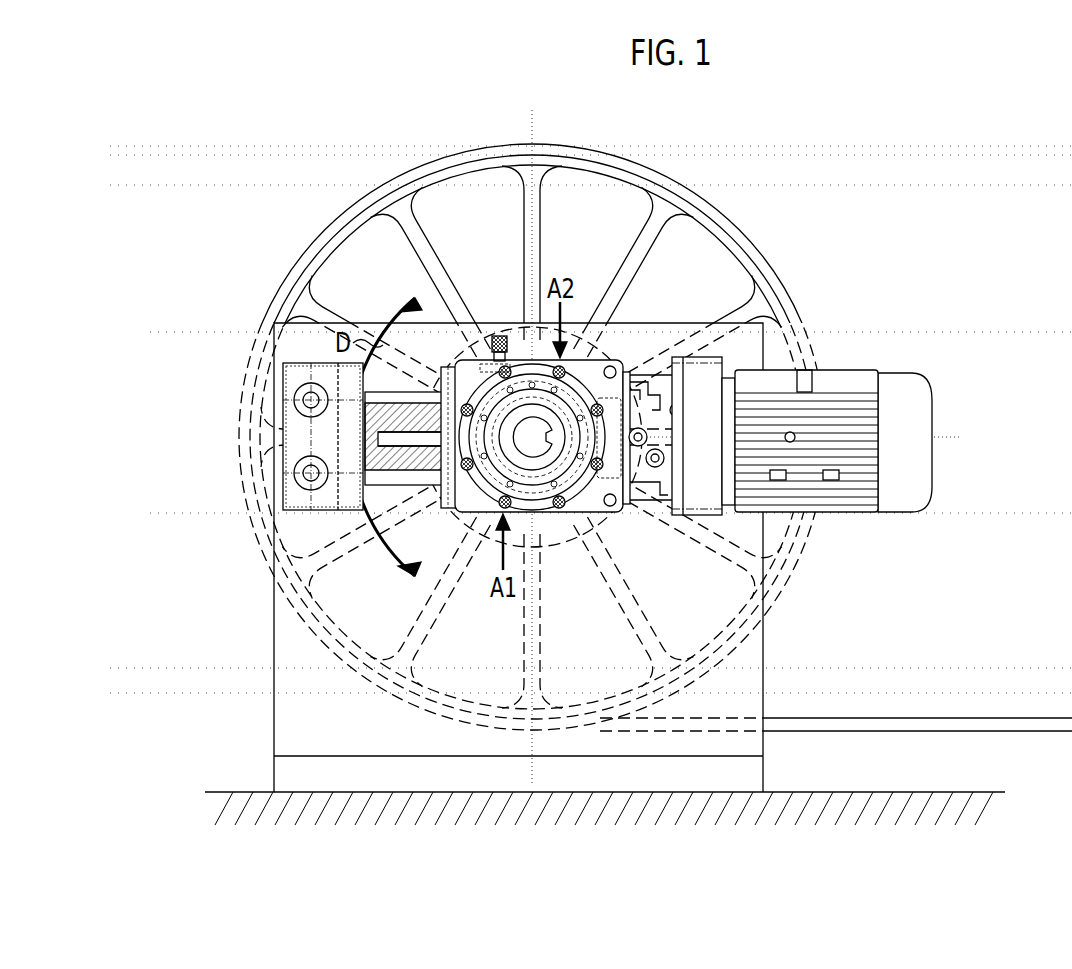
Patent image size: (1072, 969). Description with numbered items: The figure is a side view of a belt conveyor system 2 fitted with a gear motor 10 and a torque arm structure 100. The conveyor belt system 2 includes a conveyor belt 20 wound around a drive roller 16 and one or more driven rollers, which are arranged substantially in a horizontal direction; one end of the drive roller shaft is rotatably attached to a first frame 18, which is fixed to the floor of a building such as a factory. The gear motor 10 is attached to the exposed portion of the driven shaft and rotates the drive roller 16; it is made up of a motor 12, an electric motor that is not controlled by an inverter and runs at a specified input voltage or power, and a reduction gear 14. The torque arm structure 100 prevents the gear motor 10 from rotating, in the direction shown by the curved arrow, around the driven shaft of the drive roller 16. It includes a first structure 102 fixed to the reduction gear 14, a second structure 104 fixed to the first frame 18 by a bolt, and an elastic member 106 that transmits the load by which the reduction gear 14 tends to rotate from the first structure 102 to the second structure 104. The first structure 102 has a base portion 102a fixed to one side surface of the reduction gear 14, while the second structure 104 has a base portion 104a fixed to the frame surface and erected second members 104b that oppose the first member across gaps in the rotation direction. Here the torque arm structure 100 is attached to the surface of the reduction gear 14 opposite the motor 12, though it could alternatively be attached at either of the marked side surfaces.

The conveyor belt system 2 is at (257, 204).
The gear motor 10 is at (693, 347).
The motor 12 is at (836, 380).
The reduction gear 14 is at (602, 364).
The drive roller 16 is at (278, 296).
The first frame 18 is at (290, 710).
The conveyor belt 20 is at (818, 723).
The torque arm structure 100 is at (261, 466).
The first structure 102 is at (344, 306).
The base portion 102a is at (427, 402).
The second structure 104 is at (260, 435).
The base portion 104a is at (347, 398).
The second member 104b is at (355, 486).
The elastic member 106 is at (372, 452).